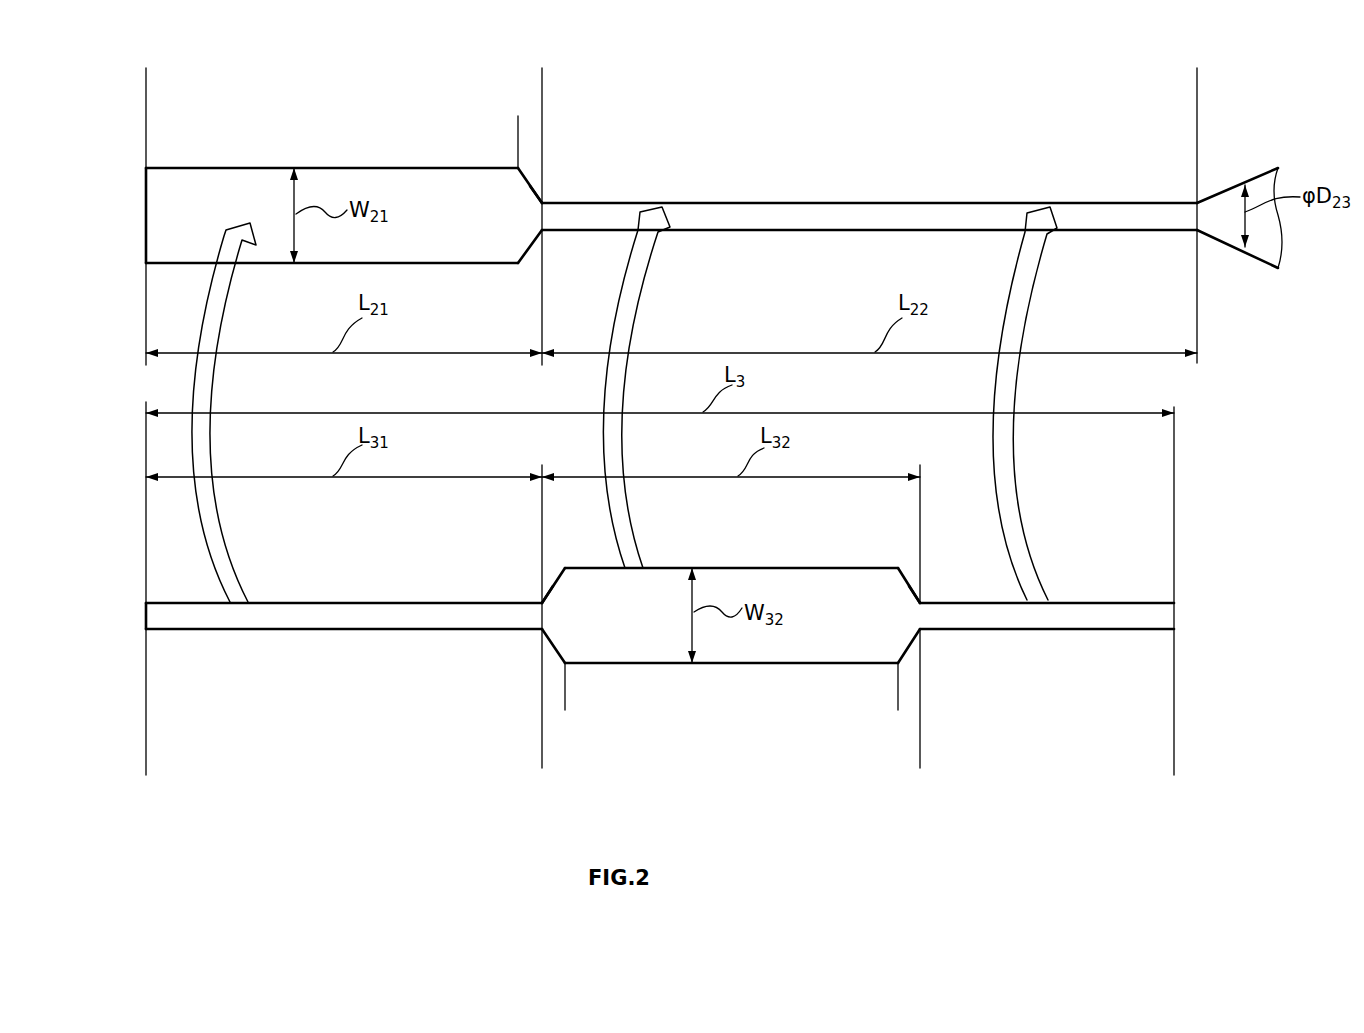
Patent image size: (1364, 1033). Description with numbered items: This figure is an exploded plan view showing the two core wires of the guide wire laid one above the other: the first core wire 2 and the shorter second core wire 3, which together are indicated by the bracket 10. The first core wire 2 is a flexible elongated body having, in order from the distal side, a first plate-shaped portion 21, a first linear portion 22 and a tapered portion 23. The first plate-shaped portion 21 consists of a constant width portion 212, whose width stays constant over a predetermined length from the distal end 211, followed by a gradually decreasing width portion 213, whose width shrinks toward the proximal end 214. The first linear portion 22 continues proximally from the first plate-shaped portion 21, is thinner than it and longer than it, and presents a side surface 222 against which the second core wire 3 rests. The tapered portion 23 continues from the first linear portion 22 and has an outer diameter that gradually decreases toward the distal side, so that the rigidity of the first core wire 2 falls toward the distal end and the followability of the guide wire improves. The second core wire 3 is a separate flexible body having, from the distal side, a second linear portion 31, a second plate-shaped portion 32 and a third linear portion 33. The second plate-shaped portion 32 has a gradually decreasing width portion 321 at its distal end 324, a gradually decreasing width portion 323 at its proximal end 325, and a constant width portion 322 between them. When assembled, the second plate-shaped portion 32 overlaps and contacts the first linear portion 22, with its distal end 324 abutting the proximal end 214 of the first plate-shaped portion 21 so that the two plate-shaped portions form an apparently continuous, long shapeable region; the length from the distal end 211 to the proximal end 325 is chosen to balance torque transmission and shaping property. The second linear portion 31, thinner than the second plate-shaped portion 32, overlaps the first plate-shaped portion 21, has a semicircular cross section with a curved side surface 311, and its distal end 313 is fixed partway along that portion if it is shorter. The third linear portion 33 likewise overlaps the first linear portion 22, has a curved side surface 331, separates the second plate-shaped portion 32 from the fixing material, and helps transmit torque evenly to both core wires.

The optical module / light guide assembly 10 is at (1260, 333).
The first core wire 2 is at (1103, 233).
The second core wire 3 is at (1107, 600).
The first plate-shaped portion 21 is at (542, 80).
The first linear portion 22 is at (1197, 80).
The tapered portion 23 is at (1284, 80).
The distal end 211 is at (146, 198).
The constant width portion 212 is at (518, 127).
The gradually decreasing width portion 213 is at (542, 127).
The proximal end 214 is at (546, 200).
The side surface 222 is at (768, 212).
The second linear portion 31 is at (542, 760).
The second plate-shaped portion 32 is at (542, 760).
The third linear portion 33 is at (1174, 760).
The side surface 311 is at (327, 615).
The distal end 313 is at (146, 618).
The gradually decreasing width portion 321 is at (565, 700).
The constant width portion 322 is at (898, 700).
The gradually decreasing width portion 323 is at (920, 700).
The distal end 324 is at (542, 600).
The proximal end 325 is at (920, 600).
The side surface 331 is at (1030, 618).